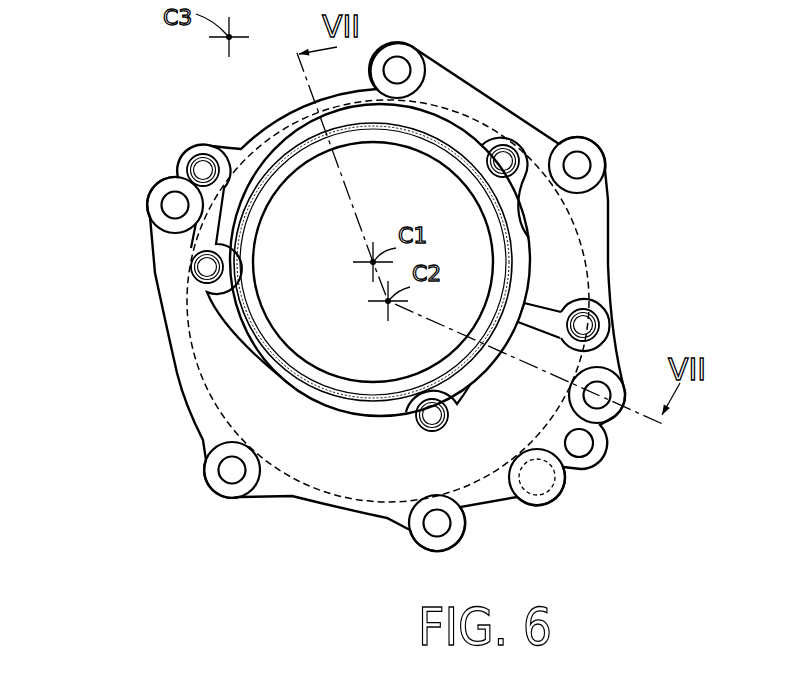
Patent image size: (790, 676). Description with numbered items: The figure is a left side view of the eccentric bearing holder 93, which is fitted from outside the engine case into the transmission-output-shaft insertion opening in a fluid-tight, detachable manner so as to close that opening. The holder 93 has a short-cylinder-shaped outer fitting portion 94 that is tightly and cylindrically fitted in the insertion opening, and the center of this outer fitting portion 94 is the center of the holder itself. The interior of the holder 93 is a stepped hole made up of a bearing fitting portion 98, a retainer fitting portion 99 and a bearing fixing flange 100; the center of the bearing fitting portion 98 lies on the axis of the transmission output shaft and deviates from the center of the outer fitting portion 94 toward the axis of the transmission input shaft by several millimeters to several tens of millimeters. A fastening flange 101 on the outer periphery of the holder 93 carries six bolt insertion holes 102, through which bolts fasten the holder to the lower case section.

The eccentric bearing holder 93 is at (140, 278).
The outer fitting portion 94 is at (207, 398).
The bearing fitting portion 98 is at (240, 279).
The retainer fitting portion 99 is at (247, 323).
The bearing fixing flange 100 is at (302, 357).
The fastening flange 101 is at (467, 88).
The bolt insertion holes 102 is at (596, 159).